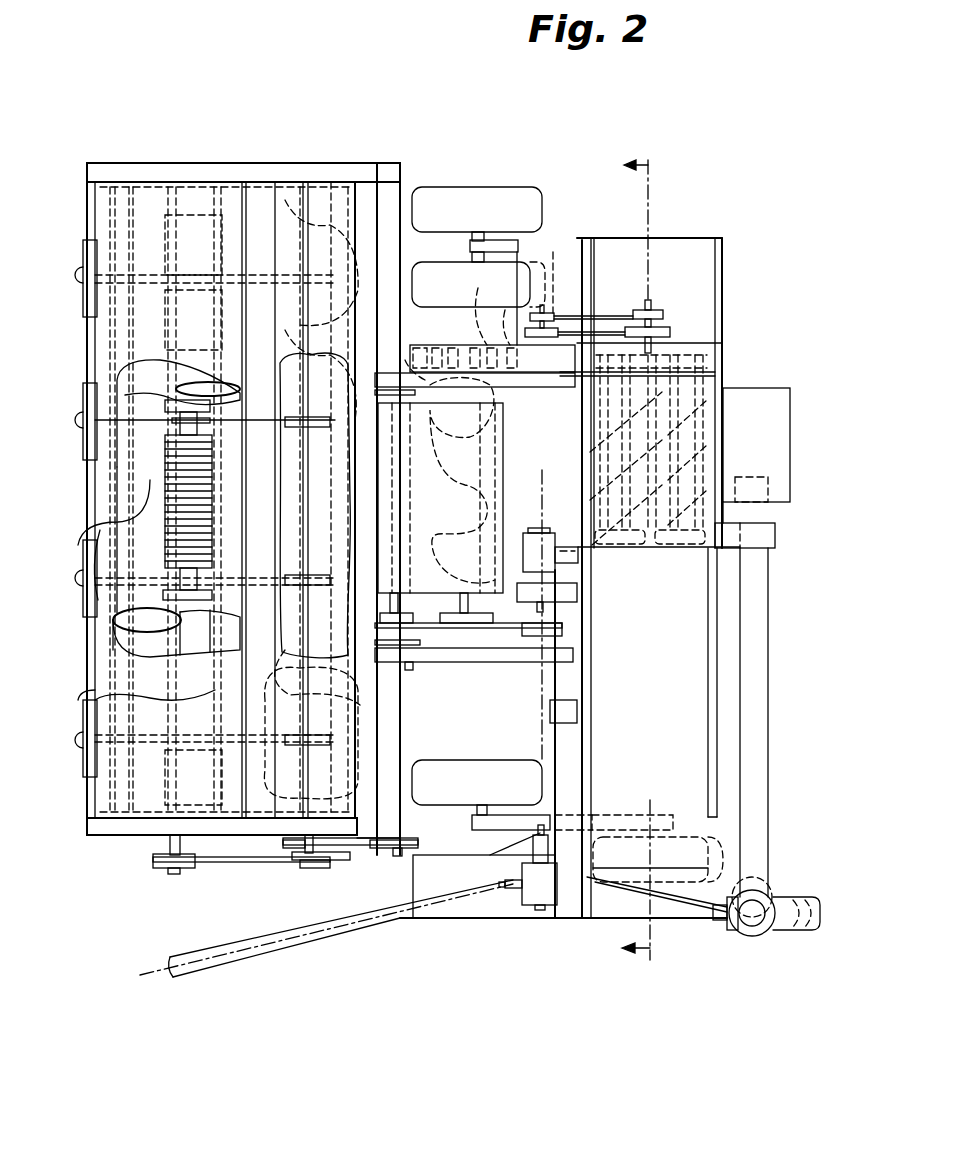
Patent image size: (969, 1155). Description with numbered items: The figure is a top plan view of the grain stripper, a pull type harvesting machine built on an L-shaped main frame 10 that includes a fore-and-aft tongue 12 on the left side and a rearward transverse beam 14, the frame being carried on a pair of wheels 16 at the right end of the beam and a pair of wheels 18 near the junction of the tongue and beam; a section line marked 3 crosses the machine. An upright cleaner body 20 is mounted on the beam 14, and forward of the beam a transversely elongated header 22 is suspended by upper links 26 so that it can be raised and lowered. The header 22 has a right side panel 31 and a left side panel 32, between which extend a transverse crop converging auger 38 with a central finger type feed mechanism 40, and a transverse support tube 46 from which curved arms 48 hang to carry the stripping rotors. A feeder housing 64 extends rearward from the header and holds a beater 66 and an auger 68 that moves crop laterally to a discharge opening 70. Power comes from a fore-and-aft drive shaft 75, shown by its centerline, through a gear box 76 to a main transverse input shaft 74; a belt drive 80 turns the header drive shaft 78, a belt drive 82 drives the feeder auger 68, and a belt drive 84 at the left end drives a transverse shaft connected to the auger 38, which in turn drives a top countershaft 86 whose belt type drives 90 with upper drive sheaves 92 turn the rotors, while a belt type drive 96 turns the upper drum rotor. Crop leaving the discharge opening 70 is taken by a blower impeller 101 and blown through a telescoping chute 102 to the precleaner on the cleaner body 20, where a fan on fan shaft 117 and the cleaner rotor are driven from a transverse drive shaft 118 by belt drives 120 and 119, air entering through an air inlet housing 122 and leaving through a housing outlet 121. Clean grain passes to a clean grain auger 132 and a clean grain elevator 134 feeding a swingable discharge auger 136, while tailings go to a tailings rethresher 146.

The main frame 10 is at (594, 975).
The tongue 12 is at (298, 956).
The transverse beam 14 is at (566, 746).
The wheels 16 is at (447, 215).
The wheels 18 is at (512, 800).
The cleaner body 20 is at (660, 727).
The header 22 is at (212, 135).
The upper links 26 is at (455, 400).
The right side panel 31 is at (157, 163).
The left side panel 32 is at (135, 836).
The crop converging auger 38 is at (331, 182).
The finger type feed mechanism 40 is at (323, 488).
The support tube 46 is at (127, 607).
The arms 48 is at (100, 531).
The feeder housing 64 is at (455, 620).
The beater 66 is at (440, 498).
The auger 68 is at (535, 533).
The discharge opening 70 is at (432, 388).
The main transverse input shaft 74 is at (540, 717).
The drive shaft 75 is at (332, 932).
The gear box 76 is at (538, 906).
The header drive shaft 78 is at (401, 748).
The belt drive 80 is at (495, 662).
The belt drive 82 is at (437, 600).
The belt drive 84 is at (362, 846).
The top countershaft 86 is at (308, 582).
The belt type drives 90 is at (225, 425).
The upper drive sheave 92 is at (330, 762).
The belt type drive 96 is at (260, 863).
The impeller 101 is at (481, 303).
The chute 102 is at (503, 315).
The fan shaft 117 is at (650, 548).
The drive shaft 118 is at (558, 313).
The belt drive 119 is at (663, 310).
The belt drive 120 is at (608, 316).
The housing outlet 121 is at (683, 548).
The air inlet housing 122 is at (752, 388).
The clean grain auger 132 is at (775, 535).
The clean grain elevator 134 is at (768, 628).
The discharge auger 136 is at (808, 897).
The tailings rethresher 146 is at (540, 537).
The section line 3 is at (647, 552).